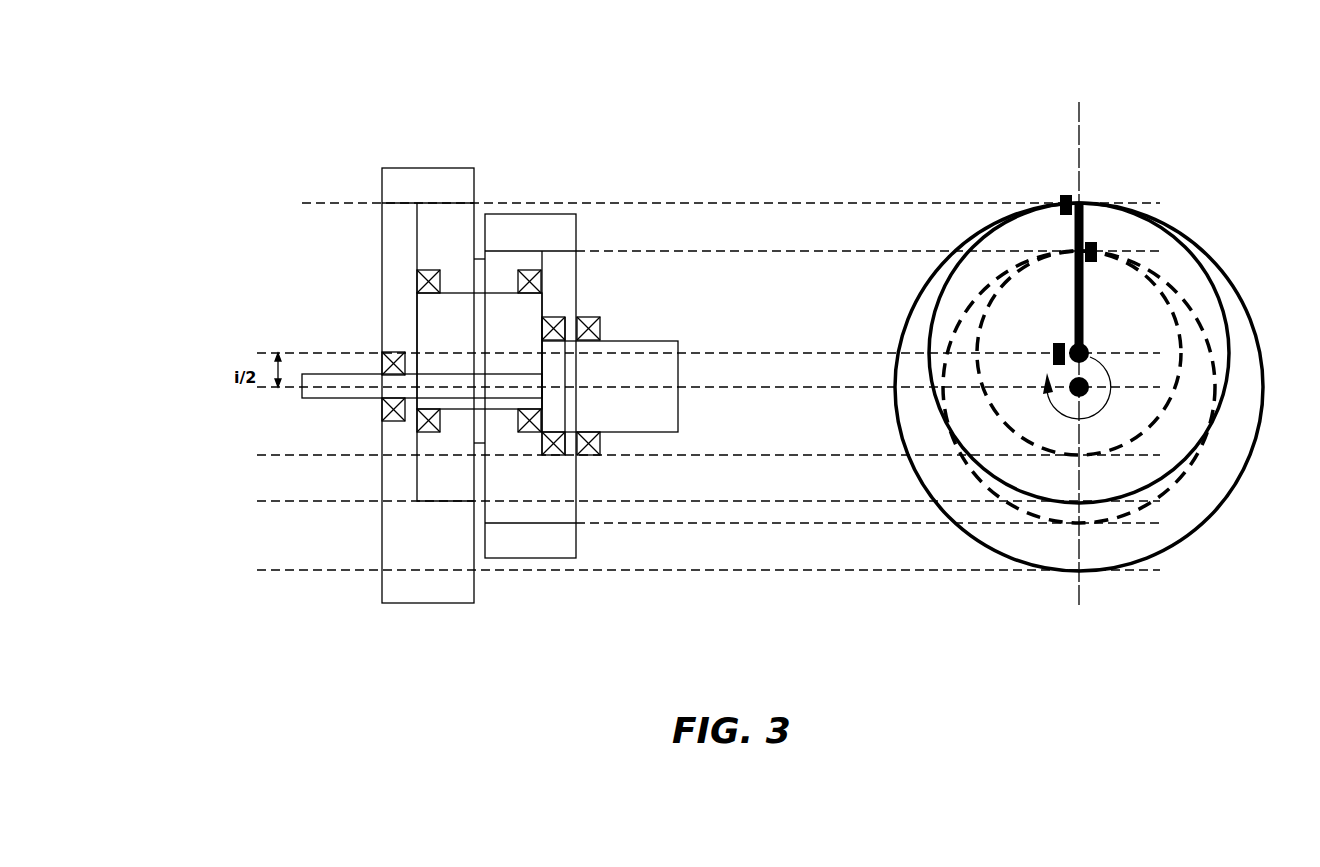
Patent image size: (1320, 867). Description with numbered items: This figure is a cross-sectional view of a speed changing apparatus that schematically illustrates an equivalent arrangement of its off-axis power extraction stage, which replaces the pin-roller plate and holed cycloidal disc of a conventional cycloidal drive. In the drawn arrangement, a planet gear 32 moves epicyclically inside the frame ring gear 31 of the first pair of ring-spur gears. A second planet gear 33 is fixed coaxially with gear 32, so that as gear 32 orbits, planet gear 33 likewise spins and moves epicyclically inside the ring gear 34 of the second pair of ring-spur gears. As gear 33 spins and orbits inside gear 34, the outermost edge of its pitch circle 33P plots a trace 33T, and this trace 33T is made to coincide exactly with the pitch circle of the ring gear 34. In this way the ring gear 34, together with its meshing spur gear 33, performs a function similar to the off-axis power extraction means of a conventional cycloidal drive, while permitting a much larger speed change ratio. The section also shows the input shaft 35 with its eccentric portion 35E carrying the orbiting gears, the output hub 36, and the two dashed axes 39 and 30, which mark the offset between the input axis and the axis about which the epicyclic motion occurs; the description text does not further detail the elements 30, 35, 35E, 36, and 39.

The axis of rotation of the crank 30 is at (712, 387).
The frame ring gear 31 is at (393, 180).
The planet gear 32 is at (462, 215).
The planet gear 33 is at (528, 260).
The outermost edge of pitch circle 33P is at (1180, 313).
The trace 33T is at (1022, 513).
The ring gear 34 is at (508, 227).
The input shaft 35 is at (313, 375).
The eccentric portion E 35E is at (428, 317).
The output hub 36 is at (667, 363).
The axis of the input shaft 39 is at (712, 352).